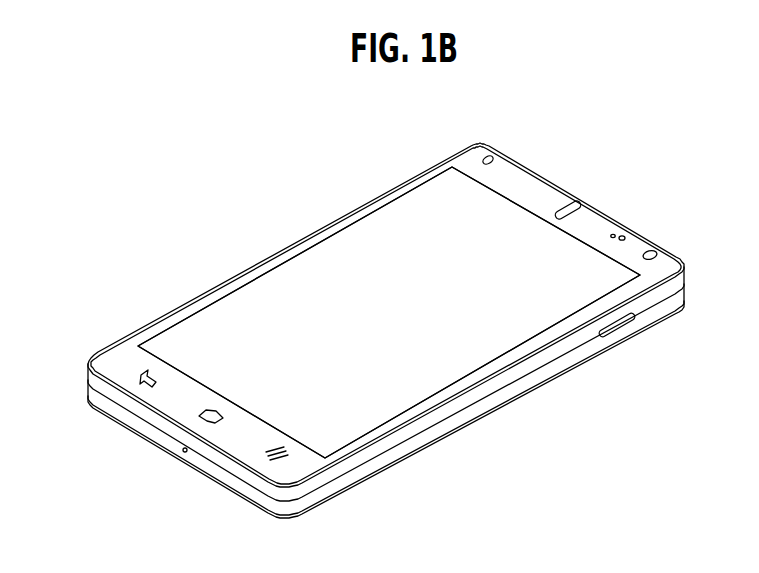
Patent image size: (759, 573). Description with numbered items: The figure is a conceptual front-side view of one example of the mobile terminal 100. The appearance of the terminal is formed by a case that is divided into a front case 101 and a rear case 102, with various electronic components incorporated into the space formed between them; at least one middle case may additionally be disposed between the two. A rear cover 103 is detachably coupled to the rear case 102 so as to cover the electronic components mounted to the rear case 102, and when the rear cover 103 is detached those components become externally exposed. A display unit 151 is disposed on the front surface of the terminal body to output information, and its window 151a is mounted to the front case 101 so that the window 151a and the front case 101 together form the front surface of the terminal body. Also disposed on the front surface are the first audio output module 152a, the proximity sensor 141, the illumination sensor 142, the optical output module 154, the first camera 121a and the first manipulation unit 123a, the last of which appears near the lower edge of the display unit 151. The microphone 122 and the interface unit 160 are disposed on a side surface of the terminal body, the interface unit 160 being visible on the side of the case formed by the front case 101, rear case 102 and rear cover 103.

The mobile terminal 100 is at (282, 190).
The front case 101 is at (682, 272).
The rear case 102 is at (682, 289).
The rear cover 103 is at (674, 305).
The display unit 151 is at (270, 300).
The window 151a is at (417, 220).
The optical output module 154 is at (497, 155).
The first audio output module 152a is at (565, 205).
The illumination sensor 142 is at (614, 234).
The proximity sensor 141 is at (623, 237).
The first camera 121a is at (652, 251).
The interface unit 160 is at (620, 331).
The microphone 122 is at (182, 453).
The first manipulation unit 123a is at (266, 458).